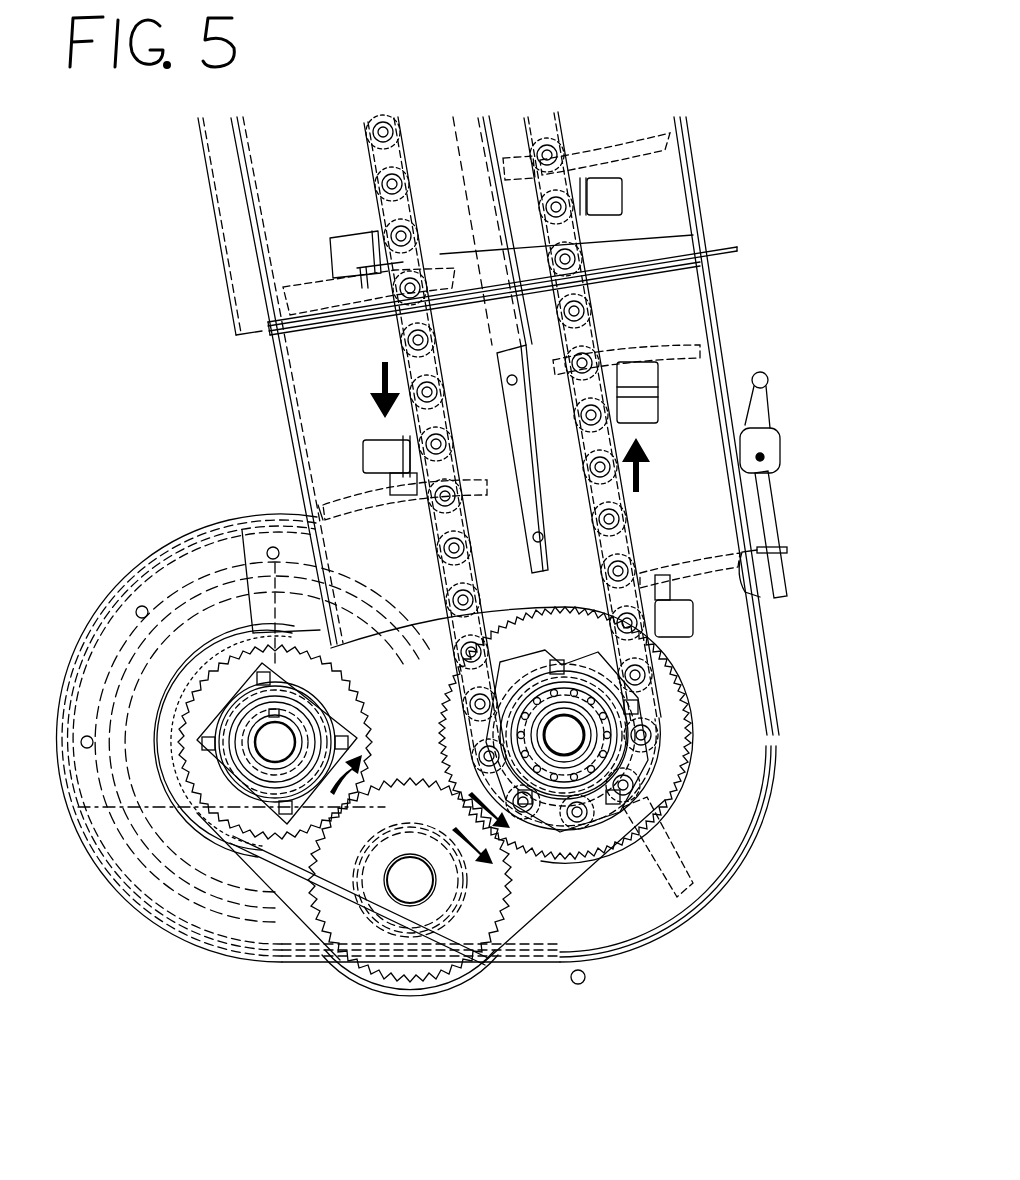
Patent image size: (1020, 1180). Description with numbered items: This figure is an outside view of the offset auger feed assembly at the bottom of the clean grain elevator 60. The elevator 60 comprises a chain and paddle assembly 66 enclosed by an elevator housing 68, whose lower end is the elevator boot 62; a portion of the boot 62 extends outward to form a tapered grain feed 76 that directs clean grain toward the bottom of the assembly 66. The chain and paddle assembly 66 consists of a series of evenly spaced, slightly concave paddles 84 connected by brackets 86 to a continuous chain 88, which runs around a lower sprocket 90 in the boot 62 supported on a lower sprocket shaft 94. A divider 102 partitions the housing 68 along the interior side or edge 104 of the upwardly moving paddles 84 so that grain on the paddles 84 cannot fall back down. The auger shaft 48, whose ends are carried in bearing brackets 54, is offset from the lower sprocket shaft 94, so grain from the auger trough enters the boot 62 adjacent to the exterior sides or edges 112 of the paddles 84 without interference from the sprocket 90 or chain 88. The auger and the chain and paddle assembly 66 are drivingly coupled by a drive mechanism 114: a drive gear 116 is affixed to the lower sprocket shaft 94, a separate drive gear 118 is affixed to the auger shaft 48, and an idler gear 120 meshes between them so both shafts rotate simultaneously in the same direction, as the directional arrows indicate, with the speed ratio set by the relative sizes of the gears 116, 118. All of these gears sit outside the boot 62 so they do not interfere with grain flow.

The auger shaft 48 is at (264, 748).
The bracket 54 is at (225, 752).
The clean grain elevator 60 is at (273, 245).
The elevator boot 62 is at (205, 540).
The chain and paddle assembly 66 is at (383, 347).
The elevator housing 68 is at (680, 140).
The tapered grain feed 76 is at (365, 760).
The paddle 84 is at (363, 497).
The bracket 86 is at (625, 200).
The continuous chain 88 is at (703, 280).
The lower sprocket 90 is at (603, 790).
The lower sprocket shaft 94 is at (582, 735).
The divider 102 is at (763, 483).
The interior side or edge 104 is at (590, 335).
The exterior side or edge 112 is at (320, 513).
The drive mechanism 114 is at (471, 988).
The lower sprocket drive gear 116 is at (662, 787).
The auger shaft drive gear 118 is at (215, 676).
The idler gear 120 is at (405, 970).